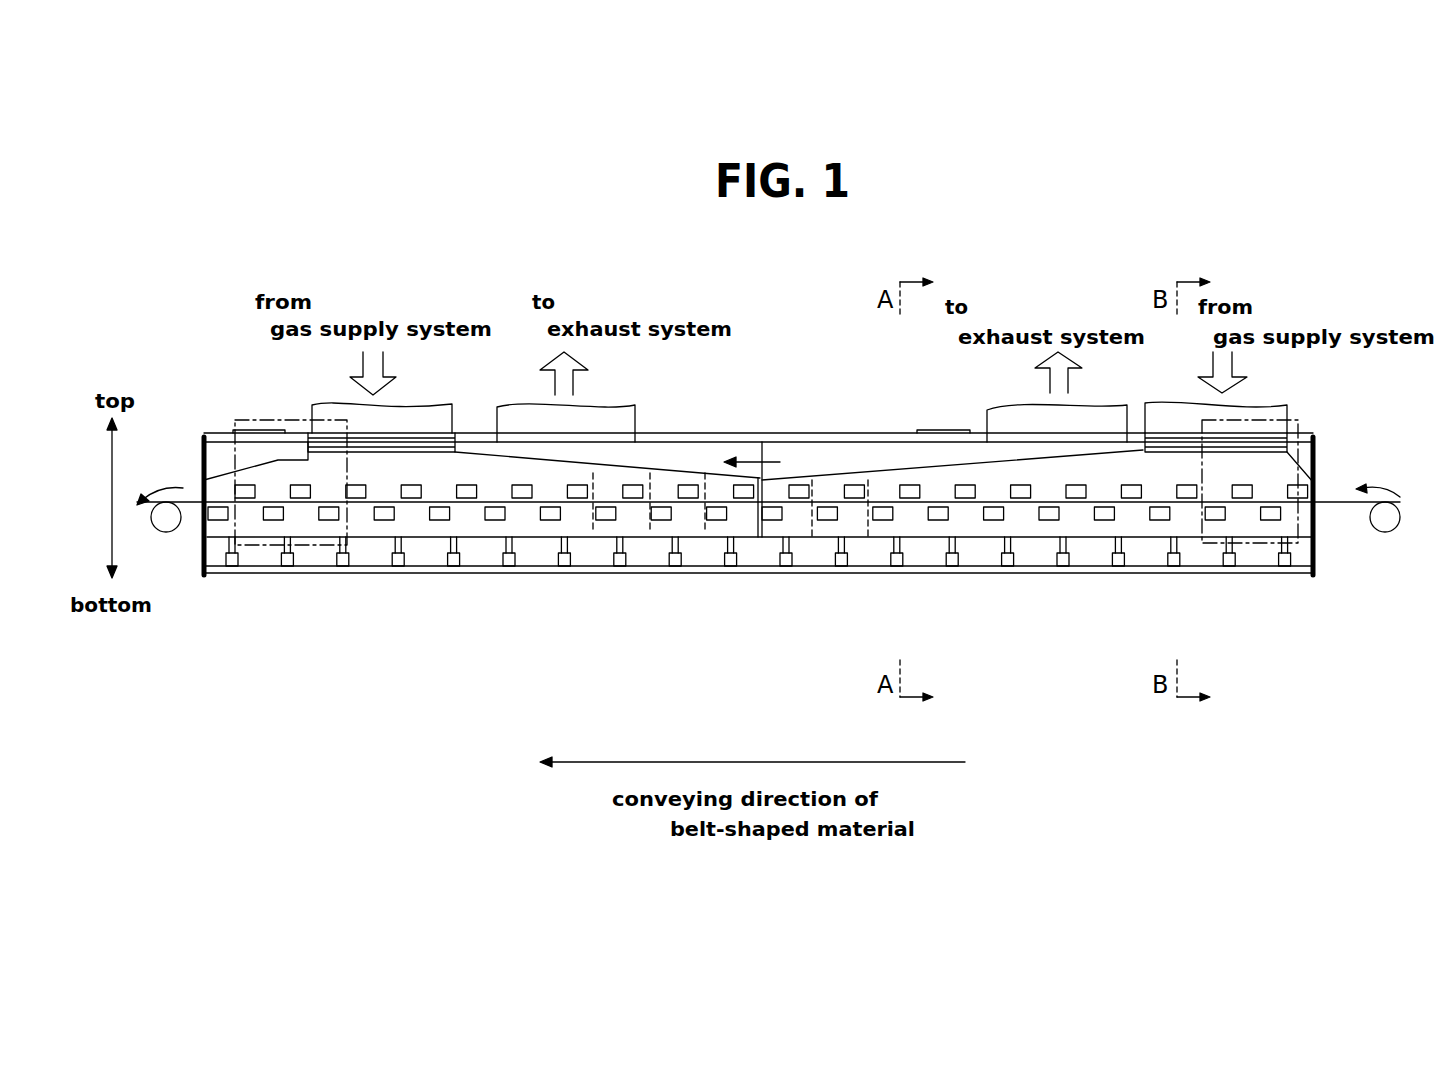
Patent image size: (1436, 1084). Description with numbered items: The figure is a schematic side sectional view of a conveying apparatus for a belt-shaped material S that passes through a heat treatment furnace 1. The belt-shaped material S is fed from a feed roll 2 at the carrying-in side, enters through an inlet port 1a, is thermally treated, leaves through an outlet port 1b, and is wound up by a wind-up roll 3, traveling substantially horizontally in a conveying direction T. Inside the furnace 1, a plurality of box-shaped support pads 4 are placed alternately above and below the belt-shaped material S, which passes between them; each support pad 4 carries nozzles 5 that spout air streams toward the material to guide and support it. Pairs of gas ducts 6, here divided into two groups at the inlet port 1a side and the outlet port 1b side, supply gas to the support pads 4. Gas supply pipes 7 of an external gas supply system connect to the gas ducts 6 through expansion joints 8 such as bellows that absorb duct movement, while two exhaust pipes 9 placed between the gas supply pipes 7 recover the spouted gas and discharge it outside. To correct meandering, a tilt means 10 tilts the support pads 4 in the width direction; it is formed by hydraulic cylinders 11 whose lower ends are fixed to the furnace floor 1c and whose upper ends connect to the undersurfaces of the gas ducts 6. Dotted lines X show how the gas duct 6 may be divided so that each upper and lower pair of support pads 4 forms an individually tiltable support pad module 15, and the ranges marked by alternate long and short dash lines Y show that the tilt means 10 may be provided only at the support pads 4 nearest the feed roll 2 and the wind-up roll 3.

The heat treatment furnace 1 is at (998, 309).
The inlet port 1a is at (1318, 497).
The outlet port 1b is at (200, 498).
The furnace floor 1c is at (986, 565).
The feed roll 2 is at (1385, 533).
The wind-up roll 3 is at (157, 530).
The support pad 4 is at (300, 490).
The nozzle 5 is at (690, 500).
The gas duct 6 is at (478, 455).
The gas supply pipe 7 is at (454, 404).
The expansion joint 8 is at (412, 440).
The exhaust pipe 9 is at (636, 415).
The tilt means 10 is at (380, 565).
The hydraulic cylinder 11 is at (232, 558).
The support pad module 15 is at (600, 478).
The belt-shaped material S is at (187, 506).
The dotted line X is at (648, 472).
The alternate long and short dash line range Y is at (268, 418).
The conveying direction T is at (777, 458).